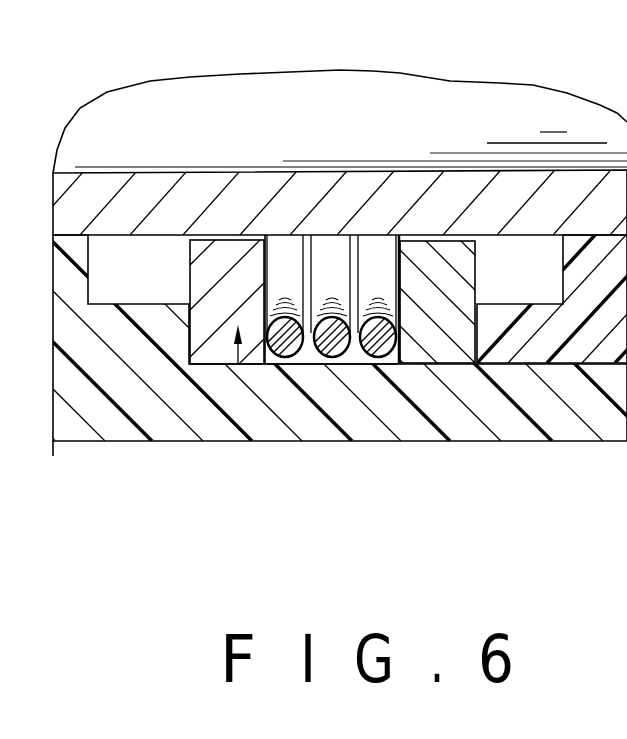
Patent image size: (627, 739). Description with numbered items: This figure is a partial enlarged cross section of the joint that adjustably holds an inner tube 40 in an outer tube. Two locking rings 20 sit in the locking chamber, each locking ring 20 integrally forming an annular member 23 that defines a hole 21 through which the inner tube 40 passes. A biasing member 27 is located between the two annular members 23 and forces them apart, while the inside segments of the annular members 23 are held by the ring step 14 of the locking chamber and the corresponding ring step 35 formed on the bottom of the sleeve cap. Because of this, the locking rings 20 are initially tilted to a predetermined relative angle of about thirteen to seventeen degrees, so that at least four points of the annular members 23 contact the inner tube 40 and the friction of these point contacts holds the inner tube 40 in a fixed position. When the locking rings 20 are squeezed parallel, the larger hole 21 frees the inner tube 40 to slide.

The inner tube 40 is at (105, 187).
The annular member 23 is at (225, 240).
The ring step 14 is at (167, 318).
The locking ring 20 is at (238, 365).
The biasing member 27 is at (335, 322).
The hole 21 is at (440, 345).
The ring step 35 is at (500, 318).